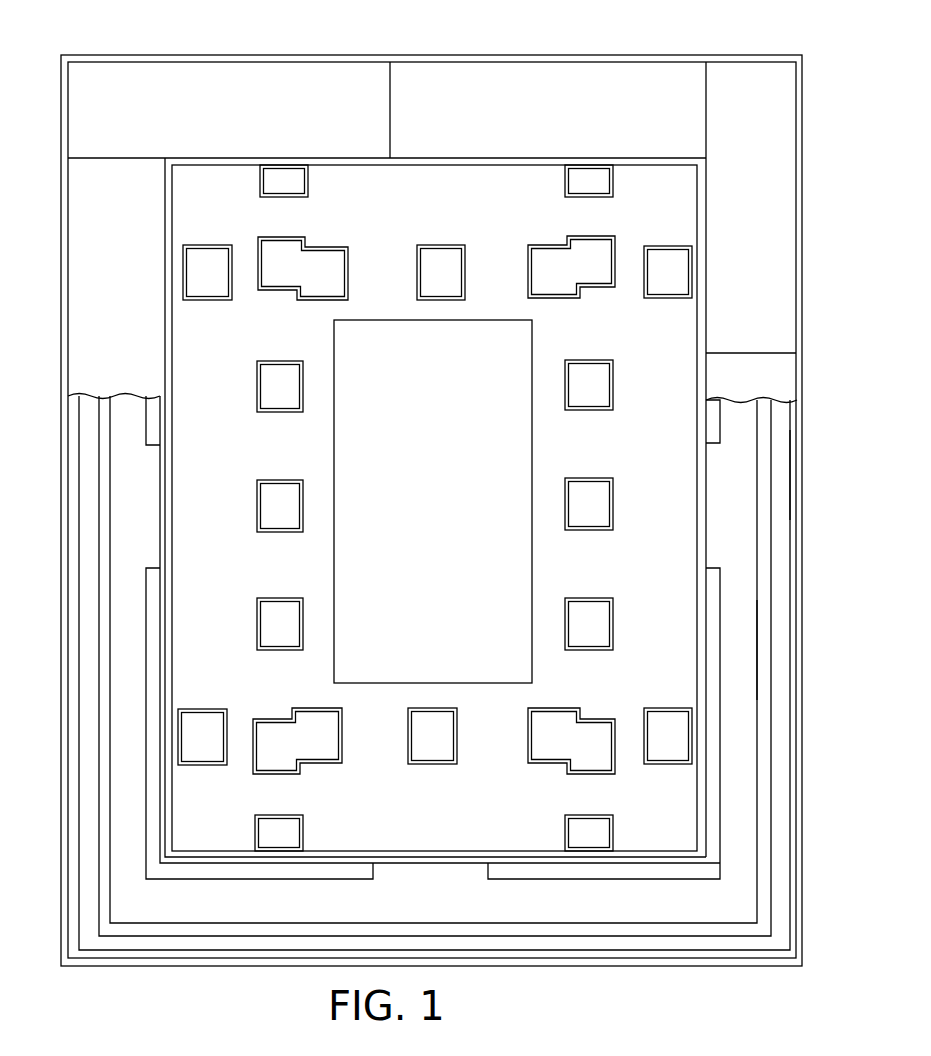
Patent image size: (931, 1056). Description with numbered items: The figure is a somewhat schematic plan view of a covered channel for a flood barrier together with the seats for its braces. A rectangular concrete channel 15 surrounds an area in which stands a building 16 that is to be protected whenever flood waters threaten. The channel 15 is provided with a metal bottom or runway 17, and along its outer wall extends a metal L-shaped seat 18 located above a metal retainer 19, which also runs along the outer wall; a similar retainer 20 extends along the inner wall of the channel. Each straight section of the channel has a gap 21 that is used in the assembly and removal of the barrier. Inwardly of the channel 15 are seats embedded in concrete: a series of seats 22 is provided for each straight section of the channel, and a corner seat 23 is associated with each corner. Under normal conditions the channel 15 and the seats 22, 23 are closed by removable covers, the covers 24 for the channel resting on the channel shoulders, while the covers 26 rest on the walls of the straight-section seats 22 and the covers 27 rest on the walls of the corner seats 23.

The concrete channel 15 is at (740, 521).
The building 16 is at (444, 490).
The metal bottom or runway 17 is at (112, 491).
The metal L-shaped seat 18 is at (778, 558).
The metal retainer 19 is at (762, 652).
The retainer 20 is at (152, 620).
The gap 21 is at (138, 513).
The seats 22 is at (583, 537).
The corner seat 23 is at (320, 240).
The channel covers 24 is at (736, 78).
The seat covers 26 is at (597, 490).
The corner seat covers 27 is at (551, 260).